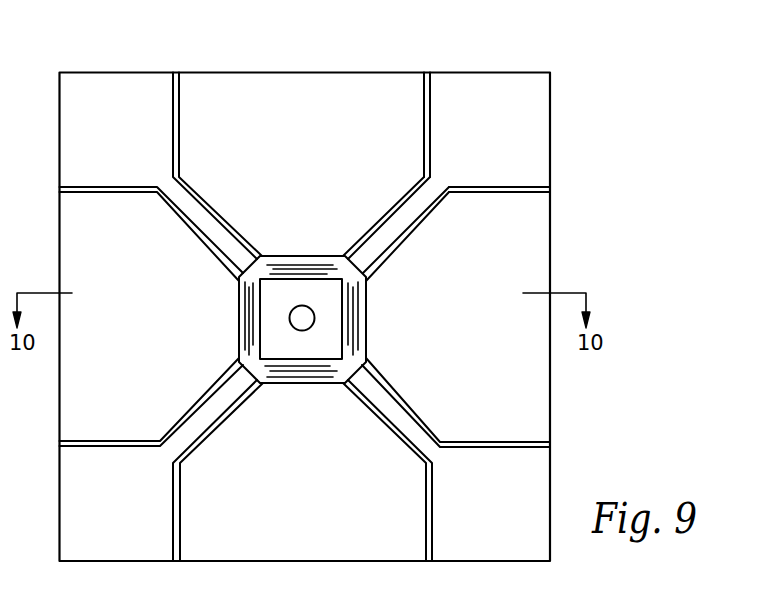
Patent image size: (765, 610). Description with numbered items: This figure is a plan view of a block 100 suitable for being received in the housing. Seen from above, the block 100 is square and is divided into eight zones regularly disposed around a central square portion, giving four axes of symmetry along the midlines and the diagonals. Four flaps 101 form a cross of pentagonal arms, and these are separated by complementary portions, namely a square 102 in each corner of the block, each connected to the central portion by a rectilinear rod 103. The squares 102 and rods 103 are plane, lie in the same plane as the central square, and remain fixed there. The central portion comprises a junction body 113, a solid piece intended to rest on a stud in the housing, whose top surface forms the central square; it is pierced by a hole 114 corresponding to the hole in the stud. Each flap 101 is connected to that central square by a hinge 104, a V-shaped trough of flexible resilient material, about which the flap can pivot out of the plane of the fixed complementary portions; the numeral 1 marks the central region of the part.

The block 100 is at (97, 57).
The flaps 101 is at (532, 250).
The square 102 is at (540, 118).
The rectilinear rods 103 is at (417, 203).
The hinges 104 is at (248, 328).
The package 1 is at (327, 332).
The junction body 113 is at (298, 348).
The hole 114 is at (298, 308).